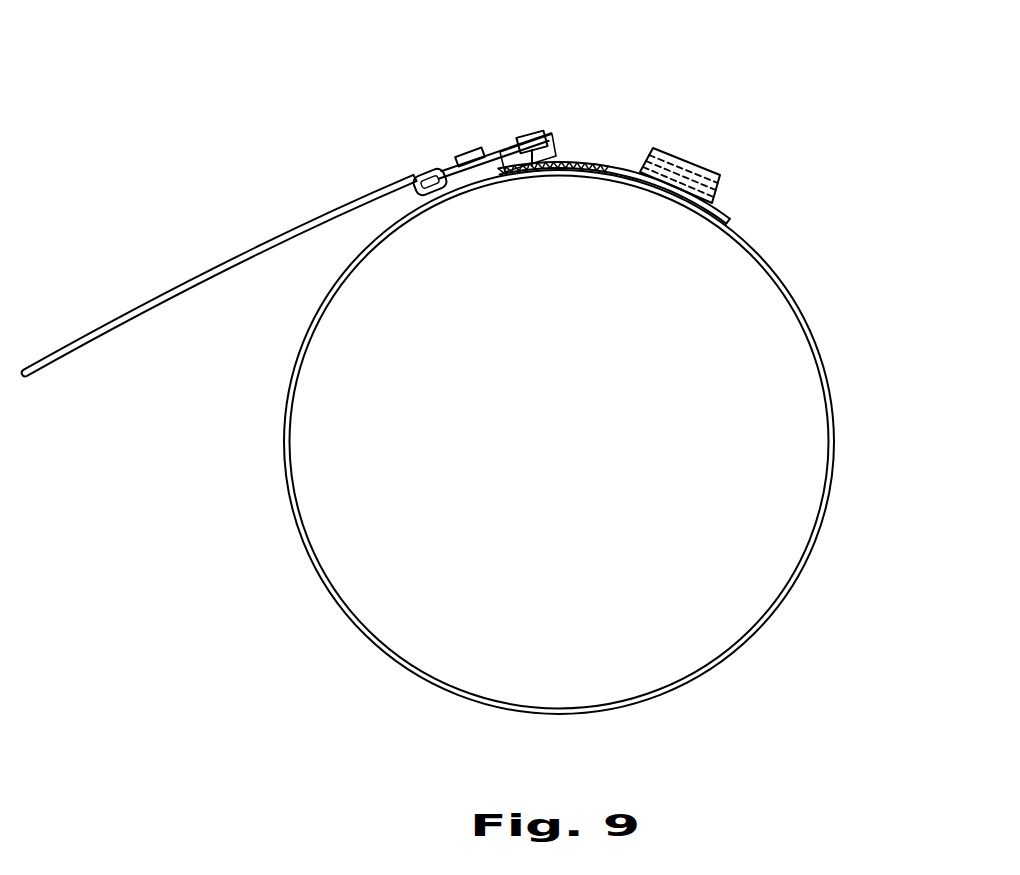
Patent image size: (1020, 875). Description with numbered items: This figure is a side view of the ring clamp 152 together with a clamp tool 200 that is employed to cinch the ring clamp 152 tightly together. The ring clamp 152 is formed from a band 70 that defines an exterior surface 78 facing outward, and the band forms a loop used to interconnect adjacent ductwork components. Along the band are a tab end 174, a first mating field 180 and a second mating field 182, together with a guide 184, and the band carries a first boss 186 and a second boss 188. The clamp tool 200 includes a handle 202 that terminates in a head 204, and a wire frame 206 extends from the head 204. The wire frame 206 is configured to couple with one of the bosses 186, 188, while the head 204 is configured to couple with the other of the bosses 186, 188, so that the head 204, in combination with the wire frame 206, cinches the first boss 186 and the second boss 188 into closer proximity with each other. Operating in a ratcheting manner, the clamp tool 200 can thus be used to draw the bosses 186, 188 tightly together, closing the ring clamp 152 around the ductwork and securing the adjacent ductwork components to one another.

The band 70 is at (378, 662).
The exterior surface 78 is at (836, 467).
The ring clamp 152 is at (818, 150).
The tab end 174 is at (489, 158).
The first mating field 180 is at (605, 165).
The second mating field 182 is at (532, 133).
The guide 184 is at (707, 165).
The first boss 186 is at (458, 156).
The second boss 188 is at (498, 168).
The clamp tool 200 is at (226, 198).
The handle 202 is at (302, 228).
The head 204 is at (446, 183).
The wire frame 206 is at (552, 140).